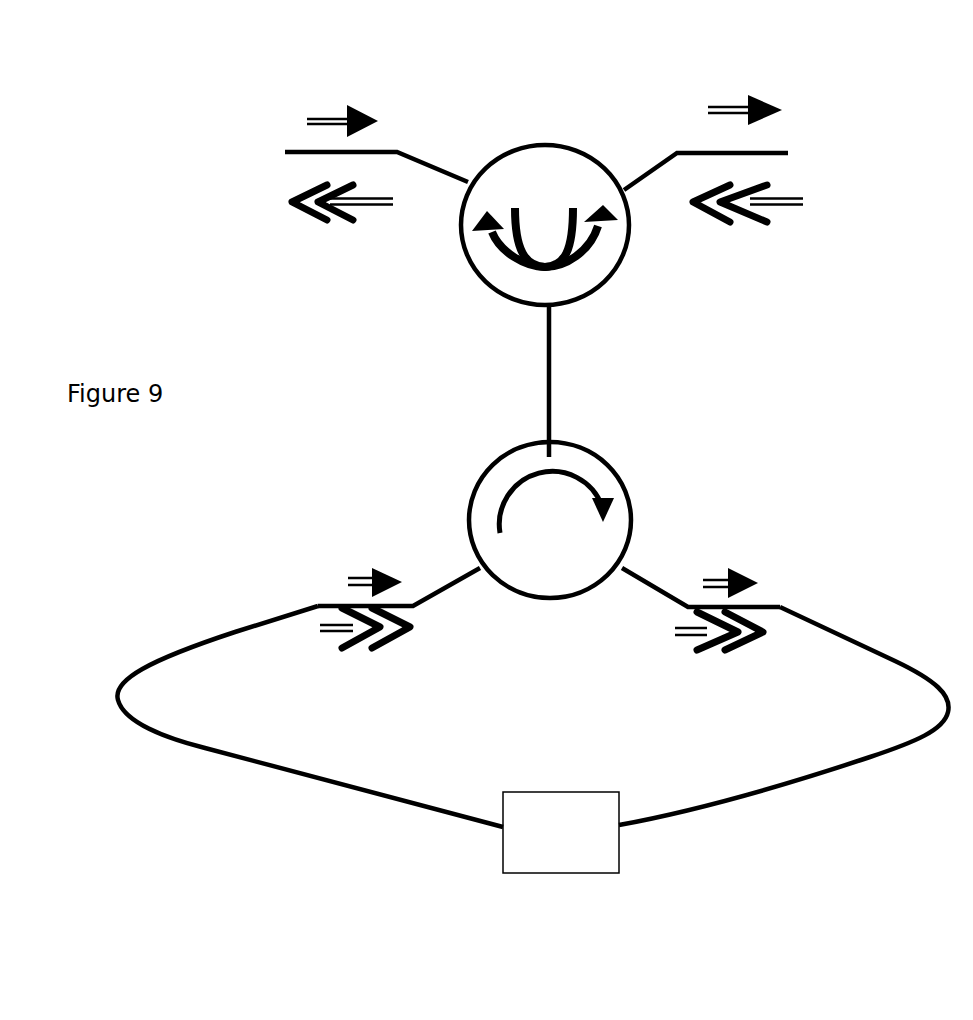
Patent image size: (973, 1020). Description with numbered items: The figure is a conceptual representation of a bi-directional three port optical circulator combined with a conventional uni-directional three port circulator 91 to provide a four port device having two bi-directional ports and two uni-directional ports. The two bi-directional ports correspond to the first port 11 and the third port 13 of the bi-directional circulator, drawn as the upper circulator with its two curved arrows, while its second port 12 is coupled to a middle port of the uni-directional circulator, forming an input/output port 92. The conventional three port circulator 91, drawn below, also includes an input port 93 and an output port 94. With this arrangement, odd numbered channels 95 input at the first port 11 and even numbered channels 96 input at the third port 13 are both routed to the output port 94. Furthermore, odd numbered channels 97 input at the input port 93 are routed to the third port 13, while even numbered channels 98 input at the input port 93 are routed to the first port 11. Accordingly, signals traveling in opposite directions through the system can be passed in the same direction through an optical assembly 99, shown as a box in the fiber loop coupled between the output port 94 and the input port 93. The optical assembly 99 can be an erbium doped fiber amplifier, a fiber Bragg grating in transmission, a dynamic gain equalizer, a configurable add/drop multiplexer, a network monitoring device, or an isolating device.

The first port 11 is at (295, 155).
The second port 12 is at (547, 353).
The third port 13 is at (788, 155).
The conventional three port circulator 91 is at (677, 467).
The input/output port 92 is at (552, 375).
The input port 93 is at (330, 605).
The output port 94 is at (767, 607).
The odd numbered channels 95 is at (305, 118).
The even numbered channels 96 is at (768, 207).
The odd numbered channels 97 is at (767, 105).
The even numbered channels 98 is at (330, 222).
The optical assembly 99 is at (580, 844).